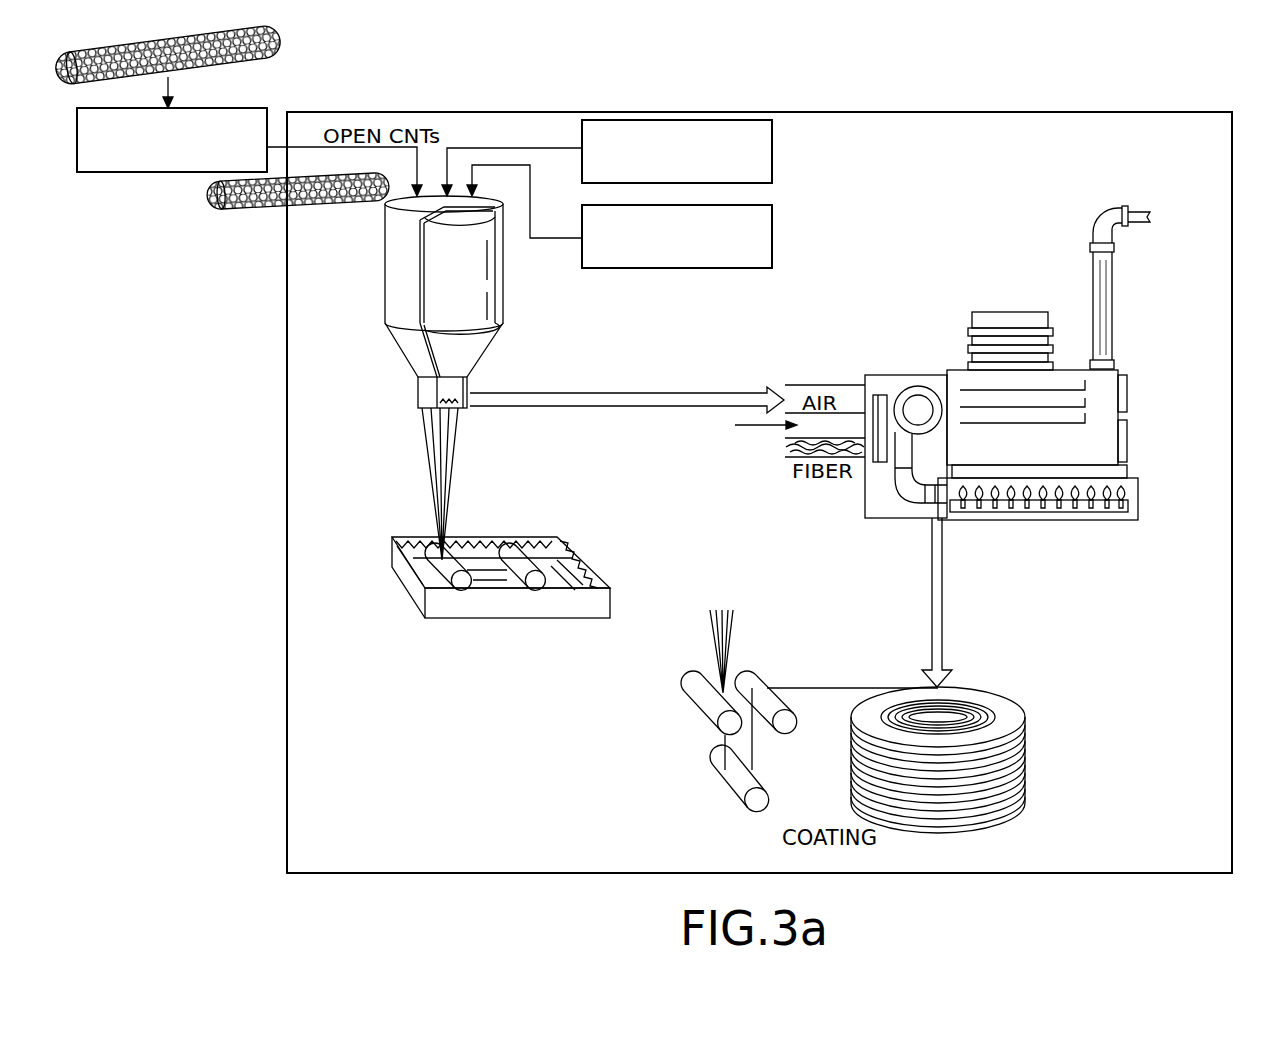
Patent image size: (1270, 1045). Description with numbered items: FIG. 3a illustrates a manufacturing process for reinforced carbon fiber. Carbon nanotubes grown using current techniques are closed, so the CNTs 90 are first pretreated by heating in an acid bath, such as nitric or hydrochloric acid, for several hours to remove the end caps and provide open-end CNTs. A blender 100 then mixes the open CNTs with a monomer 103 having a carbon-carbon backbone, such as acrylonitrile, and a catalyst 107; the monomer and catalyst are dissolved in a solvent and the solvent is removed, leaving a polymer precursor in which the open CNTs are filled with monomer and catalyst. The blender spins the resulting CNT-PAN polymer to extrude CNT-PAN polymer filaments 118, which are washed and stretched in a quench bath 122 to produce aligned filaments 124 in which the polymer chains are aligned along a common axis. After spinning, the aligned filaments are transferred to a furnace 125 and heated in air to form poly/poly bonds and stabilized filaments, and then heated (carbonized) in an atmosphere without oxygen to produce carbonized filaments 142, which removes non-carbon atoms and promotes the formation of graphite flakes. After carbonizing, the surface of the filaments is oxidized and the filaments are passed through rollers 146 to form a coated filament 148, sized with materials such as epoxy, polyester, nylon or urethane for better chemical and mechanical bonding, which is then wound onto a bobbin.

The carbon nanotubes 90 is at (267, 42).
The blender 100 is at (372, 286).
The monomer 103 is at (638, 120).
The catalyst 107 is at (772, 232).
The CNT-PAN polymer filaments 118 is at (428, 478).
The quench bath 122 is at (443, 618).
The aligned filaments 124 is at (545, 567).
The furnace 125 is at (1123, 365).
The carbonized filaments 142 is at (746, 628).
The rollers 146 is at (712, 778).
The coated filament 148 is at (1038, 740).